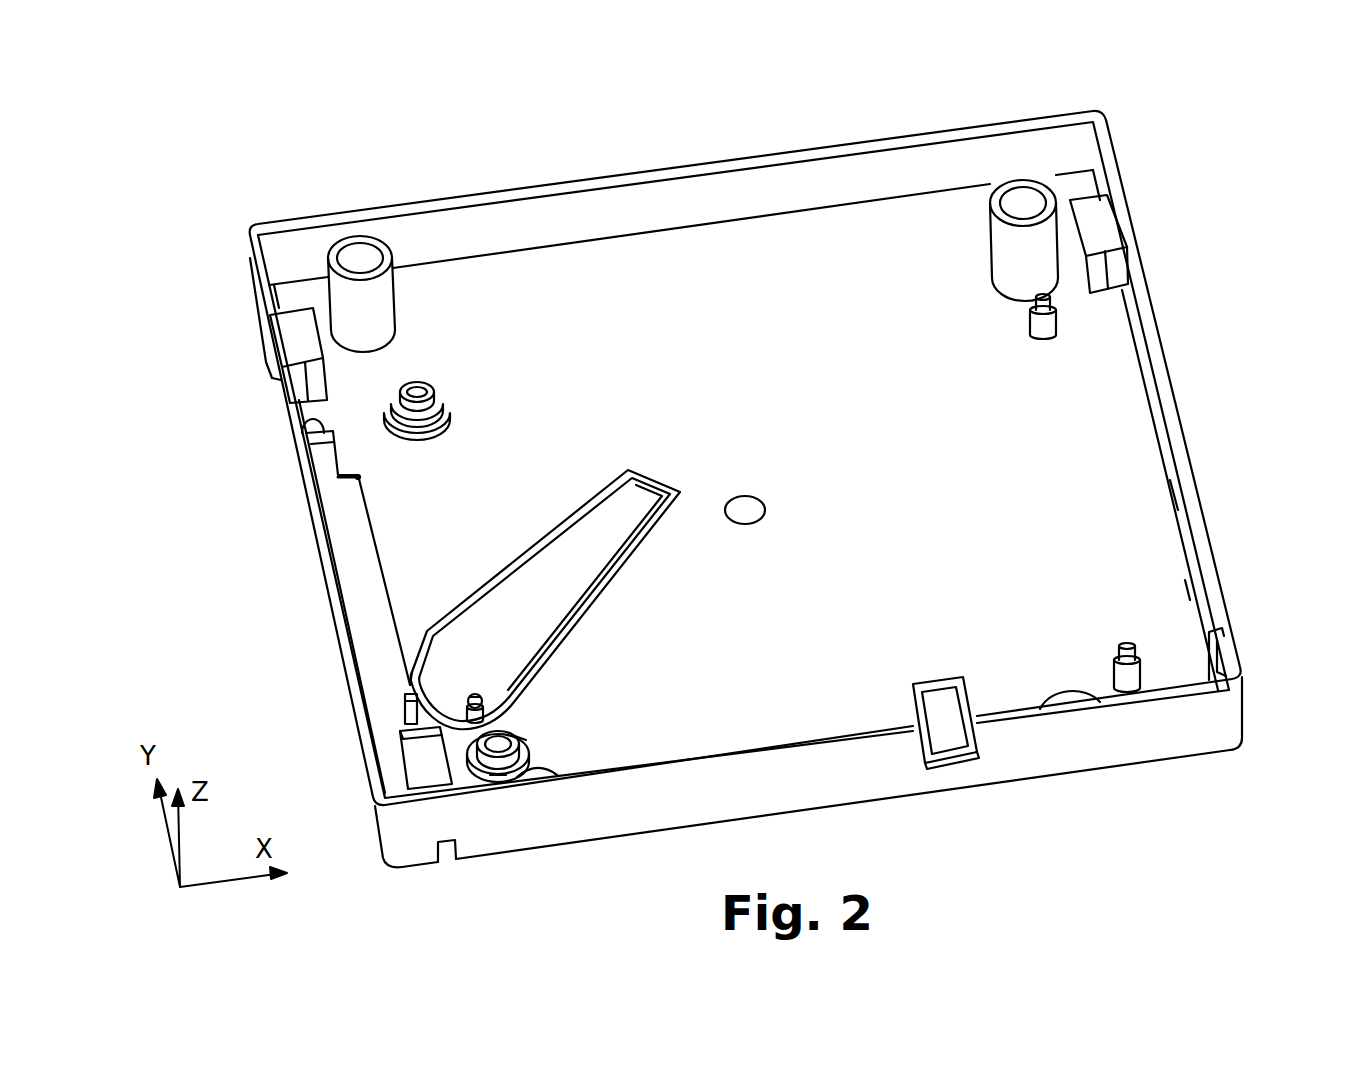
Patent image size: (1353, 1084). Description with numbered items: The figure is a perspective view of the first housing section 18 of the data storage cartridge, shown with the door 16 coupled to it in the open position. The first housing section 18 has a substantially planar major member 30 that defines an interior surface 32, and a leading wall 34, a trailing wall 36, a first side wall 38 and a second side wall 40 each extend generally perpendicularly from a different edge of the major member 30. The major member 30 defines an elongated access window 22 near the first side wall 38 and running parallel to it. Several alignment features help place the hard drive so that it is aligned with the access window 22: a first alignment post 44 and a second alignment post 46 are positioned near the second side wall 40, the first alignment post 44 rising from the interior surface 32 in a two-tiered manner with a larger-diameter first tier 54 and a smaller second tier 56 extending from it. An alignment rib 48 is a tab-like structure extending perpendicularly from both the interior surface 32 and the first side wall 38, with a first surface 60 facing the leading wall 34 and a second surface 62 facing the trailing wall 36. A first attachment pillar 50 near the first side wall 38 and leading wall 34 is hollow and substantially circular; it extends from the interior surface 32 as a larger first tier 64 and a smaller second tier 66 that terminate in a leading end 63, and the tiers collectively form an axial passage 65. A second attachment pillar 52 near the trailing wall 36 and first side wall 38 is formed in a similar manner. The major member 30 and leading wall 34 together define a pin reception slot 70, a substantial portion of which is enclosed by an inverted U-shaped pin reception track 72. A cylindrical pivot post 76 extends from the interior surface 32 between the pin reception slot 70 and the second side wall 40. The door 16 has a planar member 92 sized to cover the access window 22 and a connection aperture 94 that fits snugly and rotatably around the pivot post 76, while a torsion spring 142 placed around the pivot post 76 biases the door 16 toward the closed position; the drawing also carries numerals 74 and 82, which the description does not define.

The door 16 is at (623, 528).
The first housing section 18 is at (1188, 249).
The access window 22 is at (367, 607).
The major member 30 is at (1156, 545).
The interior surface 32 is at (1172, 597).
The leading wall 34 is at (887, 787).
The trailing wall 36 is at (805, 182).
The first side wall 38 is at (293, 470).
The second side wall 40 is at (1178, 428).
The first alignment post 44 is at (1125, 678).
The second alignment post 46 is at (1050, 322).
The alignment rib 48 is at (323, 463).
The first attachment pillar 50 is at (493, 750).
The second attachment pillar 52 is at (430, 388).
The first tier 54 is at (1143, 667).
The second tier 56 is at (1217, 637).
The first surface 60 is at (330, 480).
The second surface 62 is at (298, 420).
The leading end 63 is at (500, 780).
The first tier 64 is at (527, 757).
The passage 65 is at (478, 767).
The second tier 66 is at (520, 738).
The pin reception slot 70 is at (440, 852).
The pin reception track 72 is at (427, 767).
The bracket 74 is at (403, 722).
The pivot post 76 is at (478, 696).
The post 82 is at (488, 720).
The planar member 92 is at (607, 557).
The connection aperture 94 is at (407, 663).
The torsion spring 142 is at (479, 706).